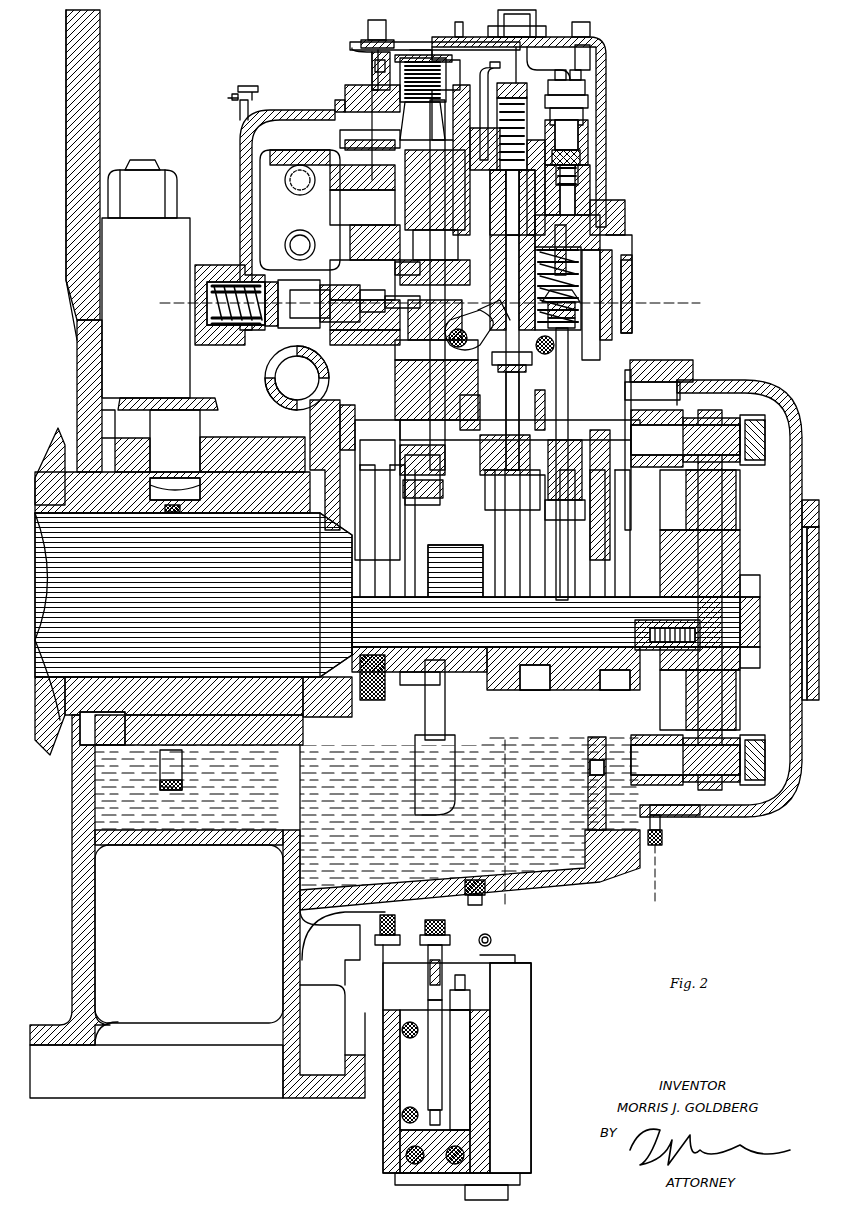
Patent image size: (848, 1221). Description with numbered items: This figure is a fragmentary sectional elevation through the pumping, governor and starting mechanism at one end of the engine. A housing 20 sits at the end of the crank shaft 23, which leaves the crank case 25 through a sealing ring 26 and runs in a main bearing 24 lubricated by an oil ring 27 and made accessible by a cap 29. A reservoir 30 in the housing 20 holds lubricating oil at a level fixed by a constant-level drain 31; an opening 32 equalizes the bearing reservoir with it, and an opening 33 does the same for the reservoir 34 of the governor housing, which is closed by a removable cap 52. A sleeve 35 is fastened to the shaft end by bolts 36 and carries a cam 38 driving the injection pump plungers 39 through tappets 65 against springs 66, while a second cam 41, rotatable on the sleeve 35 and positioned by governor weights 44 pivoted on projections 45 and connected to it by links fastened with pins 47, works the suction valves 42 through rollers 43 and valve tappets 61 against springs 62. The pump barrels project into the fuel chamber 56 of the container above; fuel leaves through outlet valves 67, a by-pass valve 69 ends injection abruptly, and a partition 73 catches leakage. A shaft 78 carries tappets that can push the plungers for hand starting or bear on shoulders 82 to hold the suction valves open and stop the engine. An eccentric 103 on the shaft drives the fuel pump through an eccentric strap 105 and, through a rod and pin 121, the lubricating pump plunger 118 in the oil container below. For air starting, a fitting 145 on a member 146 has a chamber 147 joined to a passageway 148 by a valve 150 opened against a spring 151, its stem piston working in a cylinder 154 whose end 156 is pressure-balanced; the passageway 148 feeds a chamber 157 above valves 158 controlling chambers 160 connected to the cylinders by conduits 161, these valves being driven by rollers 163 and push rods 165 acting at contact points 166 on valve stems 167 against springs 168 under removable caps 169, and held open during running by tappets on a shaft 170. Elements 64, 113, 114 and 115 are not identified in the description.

The housing 20 is at (520, 895).
The crank shaft 23 is at (55, 752).
The main bearing 24 is at (122, 400).
The crank case 25 is at (68, 225).
The sealing ring 26 is at (50, 456).
The oil ring 27 is at (165, 805).
The cap 29 is at (165, 400).
The reservoir 30 is at (517, 822).
The drain 31 is at (458, 762).
The opening 32 is at (300, 755).
The opening 33 is at (597, 783).
The reservoir 34 is at (636, 905).
The sleeve 35 is at (535, 672).
The bolts 36 is at (760, 612).
The cam 38 is at (484, 676).
The injection pump plungers 39 is at (512, 320).
The cam 41 is at (545, 660).
The suction valves 42 is at (600, 210).
The rollers 43 is at (565, 530).
The governor weights 44 is at (778, 812).
The projections 45 is at (724, 495).
The pins 47 is at (780, 386).
The removable cap 52 is at (670, 360).
The fuel oil chamber 56 is at (590, 100).
The valve tappet 61 is at (643, 224).
The spring 62 is at (585, 275).
The valve stem 64 is at (592, 178).
The tappets 65 is at (503, 364).
The spring 66 is at (580, 300).
The outlet valves 67 is at (585, 150).
The by-pass valve 69 is at (499, 148).
The partition 73 is at (520, 415).
The shaft 78 is at (570, 362).
The shoulders 82 is at (580, 325).
The eccentric 103 is at (345, 680).
The eccentric strap 105 is at (372, 478).
The cover 113 is at (606, 55).
The cap screw 114 is at (592, 28).
The tube 115 is at (543, 65).
The lubricating pump plunger 118 is at (458, 1030).
The pin 121 is at (470, 983).
The fitting 145 is at (240, 175).
The member 146 is at (345, 90).
The chamber 147 is at (248, 384).
The passageway 148 is at (293, 210).
The valve 150 is at (245, 348).
The spring 151 is at (270, 290).
The cylinder 154 is at (365, 283).
The end of cylinder 156 is at (365, 335).
The chamber 157 is at (370, 134).
The valves 158 is at (398, 144).
The chambers 160 is at (318, 132).
The conduits 161 is at (285, 174).
The rollers 163 is at (440, 510).
The push rods 165 is at (399, 322).
The contact points 166 is at (427, 469).
The valve stems 167 is at (436, 285).
The springs 168 is at (425, 55).
The removable caps 169 is at (375, 60).
The shaft 170 is at (540, 378).